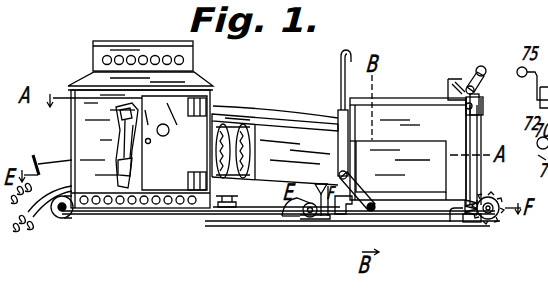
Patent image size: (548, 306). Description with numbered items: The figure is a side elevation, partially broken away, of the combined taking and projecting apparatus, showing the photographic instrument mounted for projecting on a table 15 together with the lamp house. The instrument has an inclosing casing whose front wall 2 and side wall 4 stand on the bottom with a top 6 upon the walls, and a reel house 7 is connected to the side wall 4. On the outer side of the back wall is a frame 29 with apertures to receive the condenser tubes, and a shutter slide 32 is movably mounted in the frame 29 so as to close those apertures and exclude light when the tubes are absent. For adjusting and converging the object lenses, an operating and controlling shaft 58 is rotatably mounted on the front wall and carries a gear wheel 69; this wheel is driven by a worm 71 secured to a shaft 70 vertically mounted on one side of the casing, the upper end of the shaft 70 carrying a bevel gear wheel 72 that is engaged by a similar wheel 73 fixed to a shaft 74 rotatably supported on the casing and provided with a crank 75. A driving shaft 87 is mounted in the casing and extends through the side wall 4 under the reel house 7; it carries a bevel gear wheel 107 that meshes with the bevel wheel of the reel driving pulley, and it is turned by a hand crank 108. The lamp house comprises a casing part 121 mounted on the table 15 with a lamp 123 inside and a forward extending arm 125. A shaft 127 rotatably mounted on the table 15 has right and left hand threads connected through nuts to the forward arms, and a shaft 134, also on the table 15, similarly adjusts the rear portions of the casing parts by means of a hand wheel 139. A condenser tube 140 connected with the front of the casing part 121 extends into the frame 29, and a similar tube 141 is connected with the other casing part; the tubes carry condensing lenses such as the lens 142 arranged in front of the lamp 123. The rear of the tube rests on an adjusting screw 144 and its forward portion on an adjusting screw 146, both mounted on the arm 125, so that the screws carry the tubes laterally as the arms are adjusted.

The front wall 2 is at (484, 151).
The side wall 4 is at (408, 133).
The top 6 is at (408, 85).
The reel house 7 is at (439, 226).
The table 15 is at (276, 234).
The frame 29 is at (324, 136).
The shutter slide 32 is at (326, 80).
The operating and controlling shaft 58 is at (493, 224).
The gear wheel 69 is at (481, 242).
The shaft 70 is at (490, 193).
The worm 71 is at (460, 237).
The bevel gear wheel 72 is at (490, 101).
The bevel gear wheel 73 is at (459, 77).
The shaft 74 is at (488, 83).
The crank 75 is at (483, 57).
The driving shaft 87 is at (375, 216).
The bevel gear wheel 107 is at (358, 223).
The hand crank 108 is at (332, 235).
The casing part 121 is at (278, 152).
The lamp 123 is at (89, 145).
The arm 125 is at (352, 254).
The shaft 127 is at (293, 244).
The shaft 134 is at (54, 228).
The hand wheel 139 is at (37, 231).
The condenser tube 140 is at (275, 137).
The condenser tube 141 is at (275, 94).
The condensing lens 142 is at (232, 130).
The adjusting screw 144 is at (205, 228).
The adjusting screw 146 is at (273, 252).